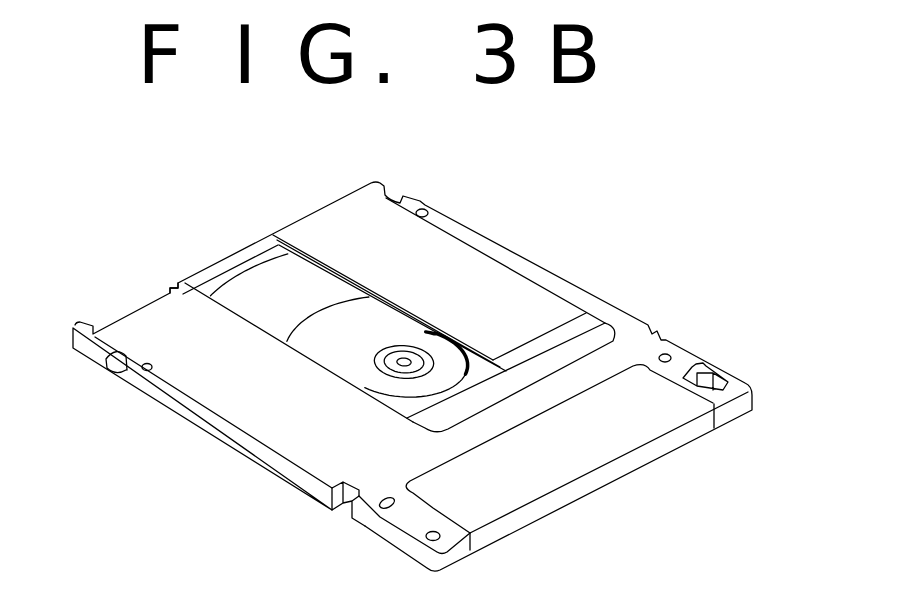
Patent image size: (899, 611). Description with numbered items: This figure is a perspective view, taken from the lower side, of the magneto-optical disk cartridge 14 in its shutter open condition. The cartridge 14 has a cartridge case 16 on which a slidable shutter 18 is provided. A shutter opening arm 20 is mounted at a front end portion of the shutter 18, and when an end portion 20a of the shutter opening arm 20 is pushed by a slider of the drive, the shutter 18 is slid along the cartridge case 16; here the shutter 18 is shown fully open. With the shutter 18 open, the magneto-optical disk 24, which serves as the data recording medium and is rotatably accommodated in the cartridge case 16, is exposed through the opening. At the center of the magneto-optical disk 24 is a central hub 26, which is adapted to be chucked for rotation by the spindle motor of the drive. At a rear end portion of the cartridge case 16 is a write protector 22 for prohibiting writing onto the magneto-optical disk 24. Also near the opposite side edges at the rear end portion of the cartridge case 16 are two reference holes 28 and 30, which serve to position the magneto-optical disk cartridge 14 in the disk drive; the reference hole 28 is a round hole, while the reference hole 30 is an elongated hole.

The magneto-optical disk cartridge 14 is at (573, 256).
The cartridge case 16 is at (452, 246).
The shutter 18 is at (318, 216).
The shutter opening arm 20 is at (220, 263).
The end portion of the shutter opening arm 20a is at (177, 283).
The write protector 22 is at (707, 367).
The magneto-optical disk 24 is at (268, 282).
The central hub 26 is at (414, 343).
The reference hole 28 is at (667, 352).
The reference hole 30 is at (382, 508).